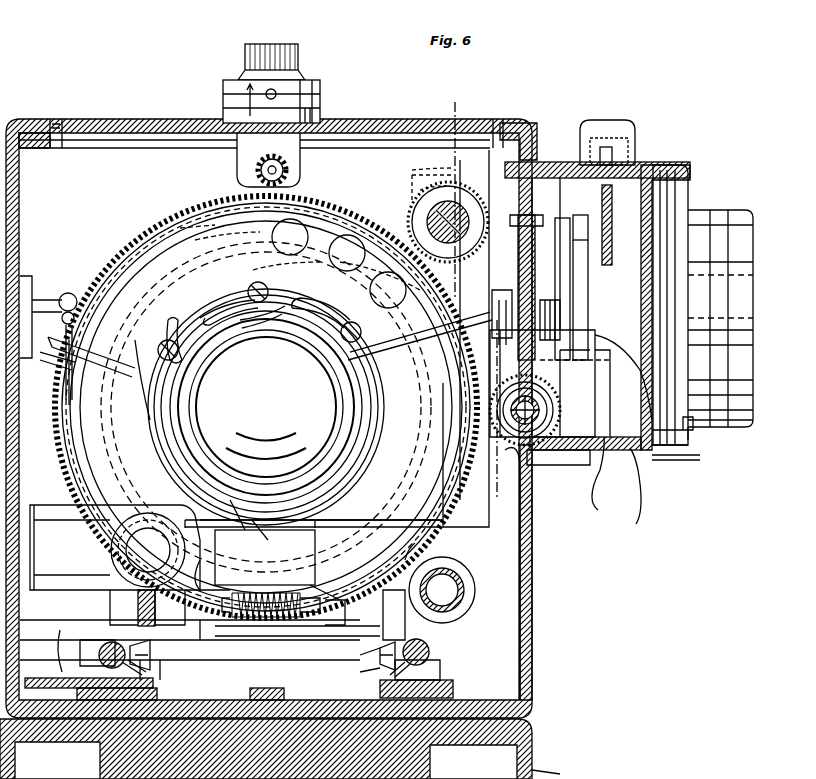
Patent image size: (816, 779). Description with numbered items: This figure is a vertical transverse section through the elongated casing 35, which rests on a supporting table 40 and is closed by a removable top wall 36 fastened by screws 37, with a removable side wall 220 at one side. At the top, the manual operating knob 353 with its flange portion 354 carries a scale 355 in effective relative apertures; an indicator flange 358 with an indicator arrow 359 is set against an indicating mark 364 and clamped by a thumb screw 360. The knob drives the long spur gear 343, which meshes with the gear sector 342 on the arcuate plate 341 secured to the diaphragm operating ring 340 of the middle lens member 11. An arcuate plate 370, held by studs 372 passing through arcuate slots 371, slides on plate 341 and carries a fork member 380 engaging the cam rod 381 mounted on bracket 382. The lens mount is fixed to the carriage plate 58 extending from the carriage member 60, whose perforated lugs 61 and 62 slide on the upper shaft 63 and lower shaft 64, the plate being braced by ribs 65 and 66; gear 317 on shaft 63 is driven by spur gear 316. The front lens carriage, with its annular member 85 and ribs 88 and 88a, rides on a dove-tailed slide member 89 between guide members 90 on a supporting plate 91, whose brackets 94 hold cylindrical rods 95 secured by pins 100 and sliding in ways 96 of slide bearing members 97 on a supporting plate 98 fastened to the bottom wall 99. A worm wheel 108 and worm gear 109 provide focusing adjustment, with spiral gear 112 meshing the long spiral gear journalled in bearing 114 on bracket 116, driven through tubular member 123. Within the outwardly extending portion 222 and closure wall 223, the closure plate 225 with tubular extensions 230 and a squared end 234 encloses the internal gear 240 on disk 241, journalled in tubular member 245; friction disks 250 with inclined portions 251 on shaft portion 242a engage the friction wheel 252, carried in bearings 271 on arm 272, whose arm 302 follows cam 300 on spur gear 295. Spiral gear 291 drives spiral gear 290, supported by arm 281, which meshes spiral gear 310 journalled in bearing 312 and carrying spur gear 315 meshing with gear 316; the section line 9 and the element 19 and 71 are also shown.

The casing 35 is at (16, 118).
The removable top wall 36 is at (126, 125).
The screws 37 is at (54, 118).
The supporting table 40 is at (535, 752).
The squared end 234 is at (565, 773).
The manual operating knob 353 is at (284, 44).
The scale 355 is at (238, 74).
The flange portion 354 is at (315, 76).
The indicator arrow 359 is at (225, 90).
The indicating mark 364 is at (223, 106).
The thumb screw 360 is at (276, 94).
The indicator disk flange portion 358 is at (322, 96).
The long spur gear 343 is at (258, 170).
The gear sector portion 342 is at (262, 200).
The arcuate plate 341 is at (194, 210).
The diaphragm operating ring 340 is at (80, 436).
The spur gear 316 is at (130, 240).
The perforated lug 61 is at (410, 210).
The upper shaft 63 is at (410, 180).
The gear 317 is at (376, 228).
The arcuate slots 371 is at (320, 322).
The studs 372 is at (256, 284).
The arcuate plate 370 is at (140, 268).
The fork member 380 is at (102, 300).
The bracket 382 is at (44, 290).
The cam rod 381 is at (66, 390).
The annular member 85 is at (120, 487).
The bearing 114 is at (100, 530).
The bracket 116 is at (72, 547).
The spiral gear 112 is at (136, 606).
The cylindrical rods 95 is at (108, 644).
The slide bearing members 97 is at (92, 659).
The ways 96 is at (120, 668).
The tubular member 123 is at (52, 651).
The pins 100 is at (100, 674).
The bottom wall 99 is at (440, 693).
The supporting plate 98 is at (440, 670).
The guide members 90 is at (176, 660).
The brackets 94 is at (202, 668).
The supporting plate 91 is at (238, 660).
The worm wheel 108 is at (262, 622).
The worm gear 109 is at (292, 620).
The rib 88a is at (205, 572).
The rib 88 is at (340, 558).
The carriage plate 58 is at (245, 528).
The middle lens member 11 is at (272, 474).
The lens 19 is at (300, 470).
The carriage member 60 is at (445, 436).
The rib 66 is at (402, 480).
The spiral gear 290 is at (488, 380).
The section line 9 is at (466, 101).
The gear 71 is at (456, 206).
The rib 65 is at (385, 330).
The bearings 271 is at (500, 308).
The arm 272 is at (496, 326).
The lower shaft 64 is at (460, 600).
The perforated lug 62 is at (440, 612).
The dove-tailed slide member 89 is at (340, 606).
The side wall 220 is at (540, 594).
The spiral gear 291 is at (538, 215).
The friction wheel 252 is at (560, 218).
The arm 302 is at (590, 120).
The cam 300 is at (598, 140).
The spur gear 295 is at (640, 160).
The inclined portions 251 is at (575, 274).
The friction disks 250 is at (585, 289).
The plate 225 is at (680, 192).
The tubular extensions 230 is at (705, 230).
The tubular member 245 is at (640, 305).
The outer shaft portion 242a is at (655, 350).
The internal gear 240 is at (690, 437).
The disk 241 is at (690, 445).
The arm 281 is at (600, 370).
The spiral gear 310 is at (548, 462).
The bearing 312 is at (546, 470).
The spur gear 315 is at (536, 492).
The outwardly extending portion 222 is at (607, 477).
The vertical closure wall 223 is at (634, 524).